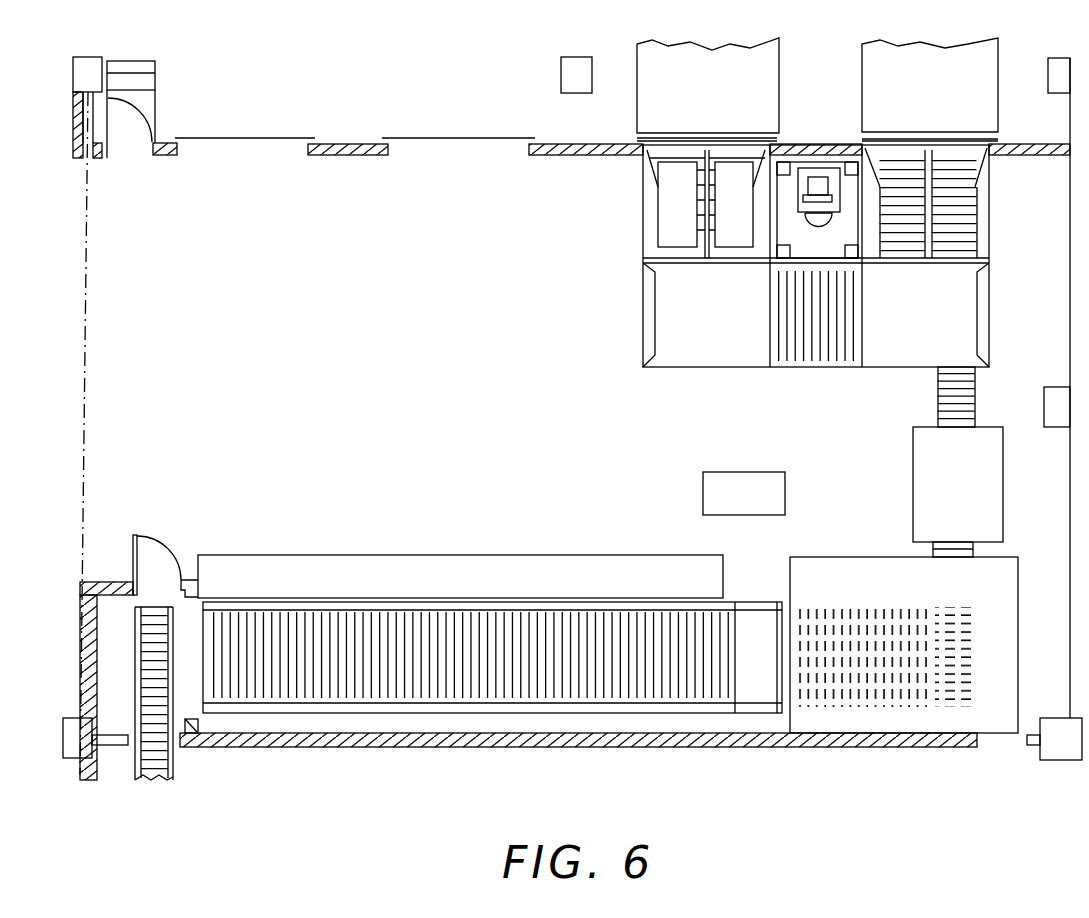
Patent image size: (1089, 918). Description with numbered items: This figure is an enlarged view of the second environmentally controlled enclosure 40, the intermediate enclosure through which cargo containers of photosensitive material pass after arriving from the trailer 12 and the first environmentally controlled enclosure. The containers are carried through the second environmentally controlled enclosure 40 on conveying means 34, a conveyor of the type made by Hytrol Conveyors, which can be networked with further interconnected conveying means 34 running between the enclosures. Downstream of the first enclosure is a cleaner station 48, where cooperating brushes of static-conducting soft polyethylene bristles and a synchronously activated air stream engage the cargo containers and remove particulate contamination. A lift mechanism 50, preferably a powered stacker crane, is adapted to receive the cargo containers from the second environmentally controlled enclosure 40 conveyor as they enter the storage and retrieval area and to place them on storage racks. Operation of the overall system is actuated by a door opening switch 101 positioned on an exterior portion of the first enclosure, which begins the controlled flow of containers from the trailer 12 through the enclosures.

The trailer 12 is at (863, 101).
The conveying means 34 is at (428, 625).
The second environmentally controlled enclosure 40 is at (350, 401).
The cleaner station 48 is at (926, 487).
The lift mechanism 50 is at (703, 491).
The door opening switch 101 is at (281, 148).